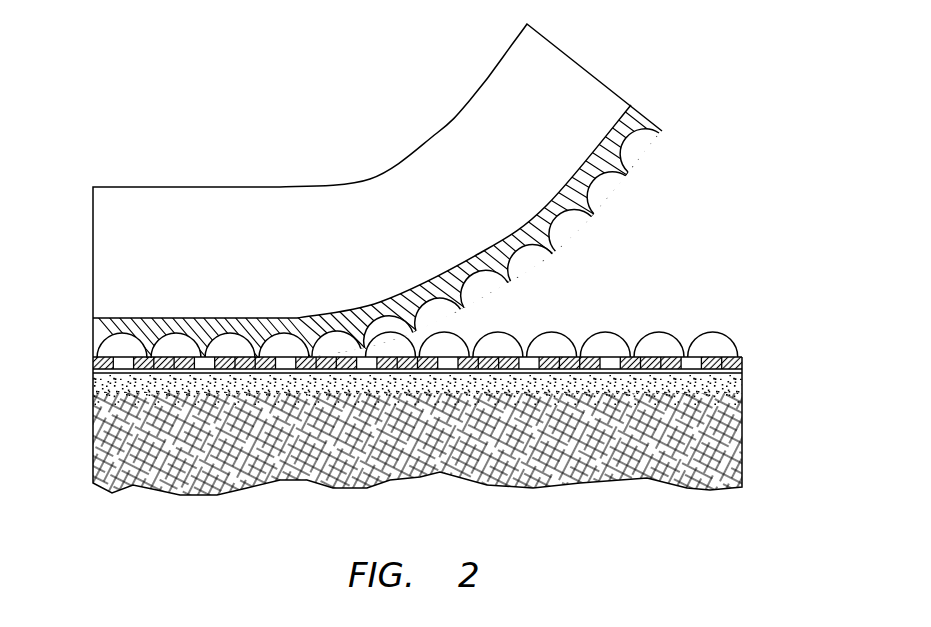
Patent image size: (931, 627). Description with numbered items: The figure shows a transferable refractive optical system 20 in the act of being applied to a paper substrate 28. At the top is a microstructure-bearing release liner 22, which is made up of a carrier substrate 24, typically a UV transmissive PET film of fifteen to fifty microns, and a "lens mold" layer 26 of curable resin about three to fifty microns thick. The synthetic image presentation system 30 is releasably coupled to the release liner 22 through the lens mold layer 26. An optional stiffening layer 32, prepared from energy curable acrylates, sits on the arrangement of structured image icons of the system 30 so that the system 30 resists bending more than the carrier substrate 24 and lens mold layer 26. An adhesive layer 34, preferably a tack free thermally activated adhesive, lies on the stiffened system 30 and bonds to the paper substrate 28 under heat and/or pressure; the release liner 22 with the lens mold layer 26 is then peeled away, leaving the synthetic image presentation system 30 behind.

The transferable refractive optical system 20 is at (77, 188).
The microstructure-bearing release liner 22 is at (174, 8).
The carrier substrate 24 is at (284, 264).
The lens mold layer 26 is at (637, 126).
The paper substrate 28 is at (717, 480).
The synthetic image presentation system 30 is at (747, 335).
The stiffening layer 32 is at (742, 372).
The adhesive layer 34 is at (742, 379).